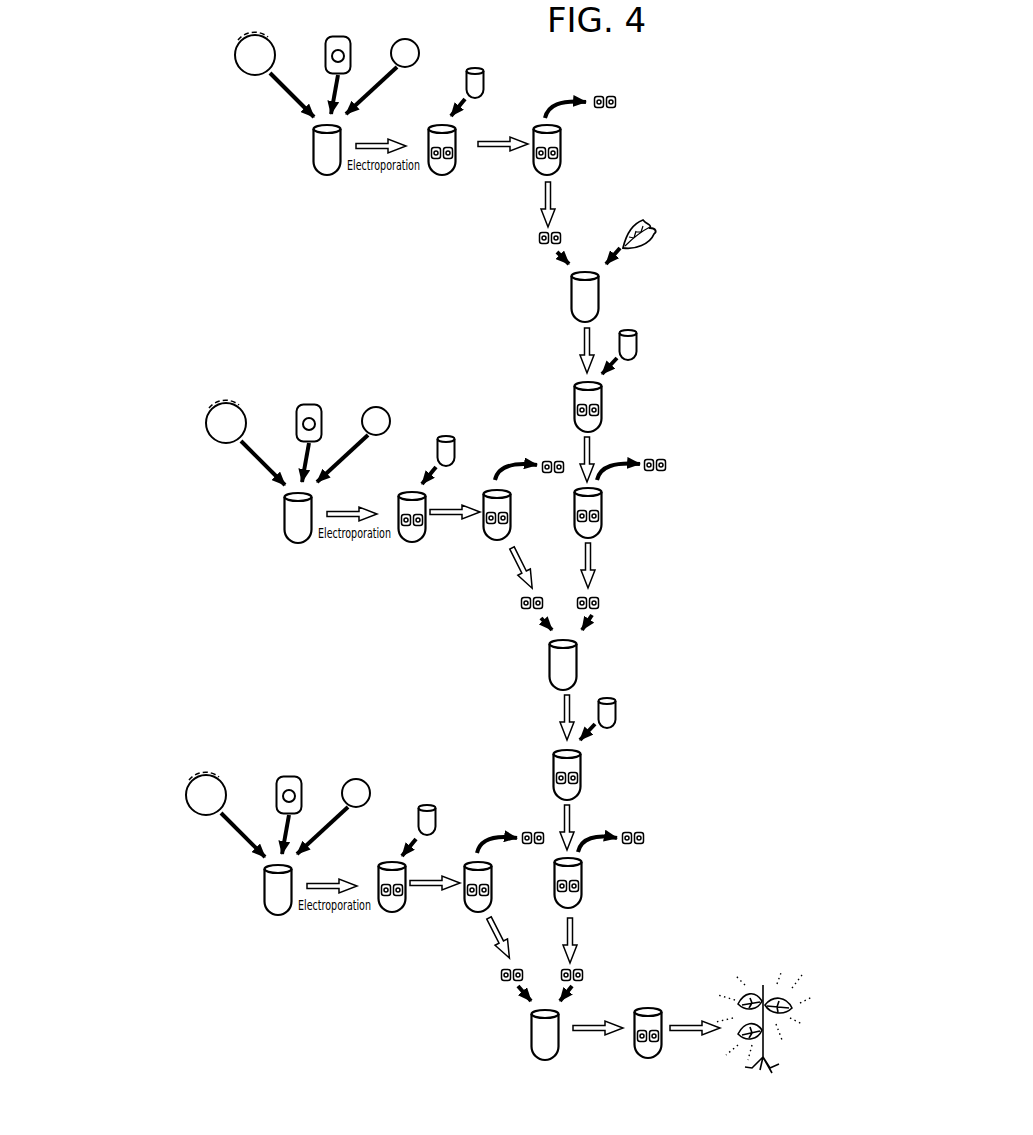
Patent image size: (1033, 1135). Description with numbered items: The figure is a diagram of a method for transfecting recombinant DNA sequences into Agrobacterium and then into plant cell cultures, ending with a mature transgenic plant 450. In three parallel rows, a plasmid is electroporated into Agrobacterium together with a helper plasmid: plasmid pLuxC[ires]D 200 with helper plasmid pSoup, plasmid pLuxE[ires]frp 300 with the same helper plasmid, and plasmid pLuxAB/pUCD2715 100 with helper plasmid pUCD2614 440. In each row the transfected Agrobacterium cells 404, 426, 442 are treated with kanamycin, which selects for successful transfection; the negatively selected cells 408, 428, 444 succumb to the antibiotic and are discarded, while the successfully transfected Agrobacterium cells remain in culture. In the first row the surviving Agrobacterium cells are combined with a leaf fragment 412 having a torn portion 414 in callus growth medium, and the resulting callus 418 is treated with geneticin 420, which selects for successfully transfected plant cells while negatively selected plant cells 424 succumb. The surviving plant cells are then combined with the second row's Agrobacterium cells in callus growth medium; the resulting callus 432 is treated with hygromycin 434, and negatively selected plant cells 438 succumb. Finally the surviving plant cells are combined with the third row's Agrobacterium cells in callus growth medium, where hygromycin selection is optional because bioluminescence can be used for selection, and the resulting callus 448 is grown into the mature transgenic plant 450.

The plasmid pLuxAB/pUCD2715 100 is at (179, 812).
The plasmid pLuxC[ires]D 200 is at (236, 58).
The plasmid pLuxE[ires]frp 300 is at (199, 440).
The transfected Agrobacterium cells 404 is at (455, 138).
The negatively selected cells 408 is at (612, 96).
The leaf fragment 412 is at (626, 233).
The torn portion 414 is at (661, 210).
The callus 418 is at (601, 416).
The geneticin 420 is at (637, 346).
The negatively selected plant cells 424 is at (660, 457).
The transfected Agrobacterium cells 426 is at (404, 542).
The negatively selected cells 428 is at (558, 460).
The callus 432 is at (580, 784).
The hygromycin 434 is at (616, 712).
The negatively selected plant cells 438 is at (640, 831).
The helper plasmid pUCD2614 440 is at (390, 787).
The transfected Agrobacterium cells 442 is at (386, 913).
The negatively selected cells 444 is at (542, 832).
The callus 448 is at (637, 1050).
The mature transgenic plant 450 is at (763, 982).